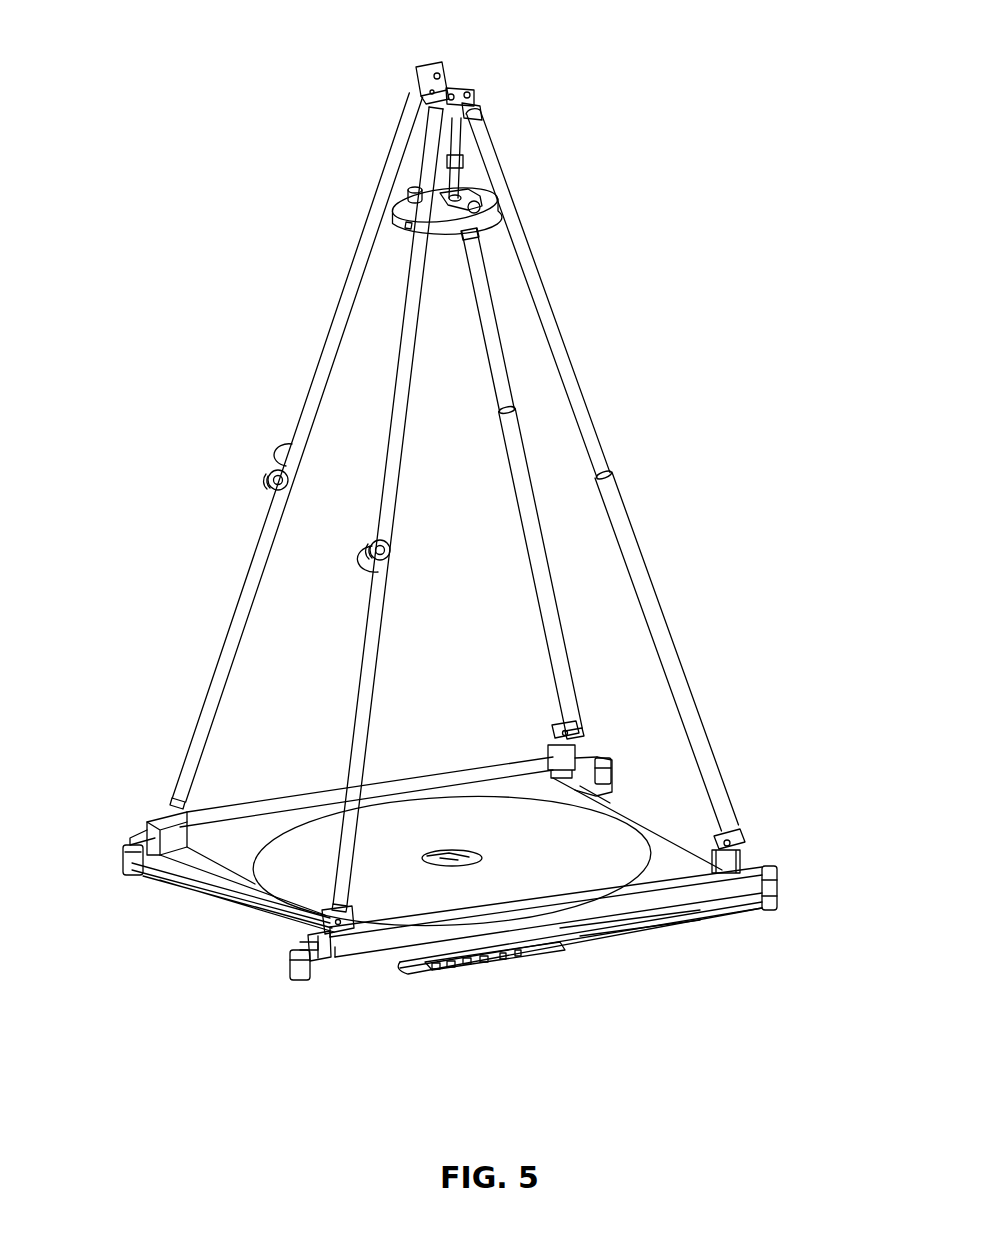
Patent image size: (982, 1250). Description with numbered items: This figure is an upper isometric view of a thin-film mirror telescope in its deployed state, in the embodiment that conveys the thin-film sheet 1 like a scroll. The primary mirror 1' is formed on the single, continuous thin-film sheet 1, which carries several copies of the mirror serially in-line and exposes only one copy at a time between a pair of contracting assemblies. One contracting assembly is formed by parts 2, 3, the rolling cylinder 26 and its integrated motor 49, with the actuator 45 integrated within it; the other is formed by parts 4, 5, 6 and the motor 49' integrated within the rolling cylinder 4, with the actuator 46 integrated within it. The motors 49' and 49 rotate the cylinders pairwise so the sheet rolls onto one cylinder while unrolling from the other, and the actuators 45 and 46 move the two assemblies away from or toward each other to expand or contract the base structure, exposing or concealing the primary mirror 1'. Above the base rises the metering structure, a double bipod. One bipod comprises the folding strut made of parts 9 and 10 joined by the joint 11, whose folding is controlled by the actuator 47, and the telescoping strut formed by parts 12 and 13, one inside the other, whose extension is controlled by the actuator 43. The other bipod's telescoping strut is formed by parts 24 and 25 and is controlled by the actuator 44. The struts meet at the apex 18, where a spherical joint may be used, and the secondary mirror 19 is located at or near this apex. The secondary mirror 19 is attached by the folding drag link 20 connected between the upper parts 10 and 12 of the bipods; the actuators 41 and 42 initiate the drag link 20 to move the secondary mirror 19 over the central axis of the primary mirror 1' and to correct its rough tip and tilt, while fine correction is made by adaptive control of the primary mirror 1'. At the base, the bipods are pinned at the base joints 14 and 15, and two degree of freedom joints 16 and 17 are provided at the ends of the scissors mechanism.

The thin-film sheet 1 is at (203, 841).
The primary mirror 1' is at (397, 808).
The contracting assembly part 2 is at (528, 975).
The contracting assembly part 3 is at (528, 975).
The rolling cylinder 26 is at (528, 975).
The motor 49 is at (528, 975).
The actuator 45 is at (310, 1082).
The rolling cylinder 4 is at (396, 764).
The contracting assembly part 5 is at (396, 764).
The contracting assembly part 6 is at (396, 764).
The motor 49' is at (396, 764).
The actuator 46 is at (398, 726).
The folding strut part 9 is at (357, 606).
The folding strut part 10 is at (385, 494).
The joint 11 is at (235, 515).
The folding actuator 47 is at (109, 506).
The telescoping strut part 12 is at (596, 426).
The telescoping strut part 13 is at (709, 642).
The telescoping actuator 43 is at (632, 525).
The base joint 14 is at (735, 830).
The base joint 15 is at (330, 919).
The two degree of freedom joint 16 is at (778, 876).
The two degree of freedom joint 17 is at (290, 966).
The apex 18 is at (444, 98).
The secondary mirror 19 is at (400, 207).
The folding drag link 20 is at (552, 146).
The actuator 41 is at (552, 146).
The actuator 42 is at (484, 194).
The telescoping strut part 24 is at (500, 396).
The telescoping strut part 25 is at (504, 573).
The telescoping actuator 44 is at (454, 601).